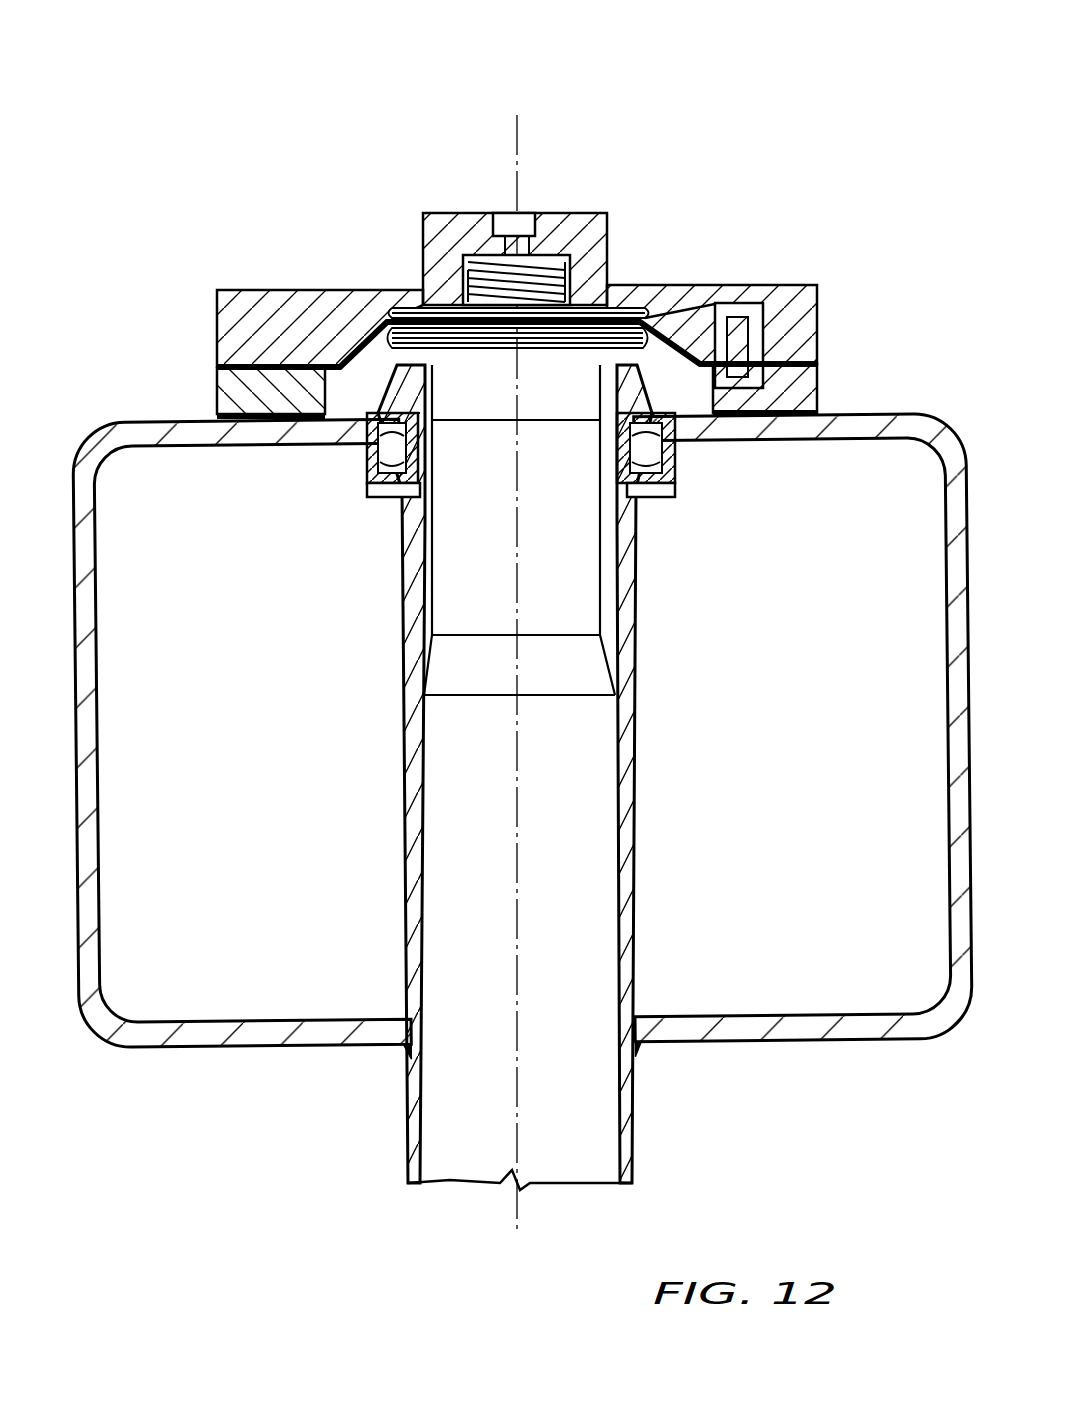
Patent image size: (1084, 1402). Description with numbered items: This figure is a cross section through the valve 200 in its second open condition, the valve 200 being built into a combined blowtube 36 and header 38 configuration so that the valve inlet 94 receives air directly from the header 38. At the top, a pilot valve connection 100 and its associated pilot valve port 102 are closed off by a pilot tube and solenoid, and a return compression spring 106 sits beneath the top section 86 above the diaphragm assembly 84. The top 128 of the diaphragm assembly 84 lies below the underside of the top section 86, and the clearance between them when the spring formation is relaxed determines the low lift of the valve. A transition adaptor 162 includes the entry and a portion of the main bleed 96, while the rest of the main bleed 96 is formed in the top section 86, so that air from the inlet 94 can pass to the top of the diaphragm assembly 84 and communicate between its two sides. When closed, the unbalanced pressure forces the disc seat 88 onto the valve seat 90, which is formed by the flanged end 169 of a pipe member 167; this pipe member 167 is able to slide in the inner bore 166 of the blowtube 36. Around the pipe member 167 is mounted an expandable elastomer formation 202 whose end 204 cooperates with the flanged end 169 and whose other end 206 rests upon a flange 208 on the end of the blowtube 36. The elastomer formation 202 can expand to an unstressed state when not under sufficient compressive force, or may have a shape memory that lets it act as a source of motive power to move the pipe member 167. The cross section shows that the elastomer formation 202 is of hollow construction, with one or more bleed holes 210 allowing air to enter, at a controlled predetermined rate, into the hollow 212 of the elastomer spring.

The valve 200 is at (270, 146).
The pilot valve connection 100 is at (505, 213).
The pilot valve port 102 is at (515, 213).
The top of the diaphragm assembly 128 is at (413, 290).
The return compression spring 106 is at (606, 213).
The disc seat 88 is at (383, 290).
The top section 86 is at (803, 300).
The main bleed 96 is at (755, 336).
The transition adaptor 162 is at (812, 390).
The diaphragm assembly 84 is at (385, 340).
The valve seat 90 is at (410, 364).
The flanged end 169 is at (435, 395).
The valve inlet 94 is at (335, 455).
The end of elastomer formation 204 is at (356, 467).
The elastomer formation 202 is at (348, 428).
The another end 206 is at (375, 470).
The flange 208 is at (382, 492).
The bleed holes 210 is at (440, 485).
The hollow 212 is at (612, 540).
The pipe member 167 is at (432, 608).
The inner bore 166 is at (624, 748).
The blowtube 36 is at (632, 910).
The header 38 is at (235, 1035).